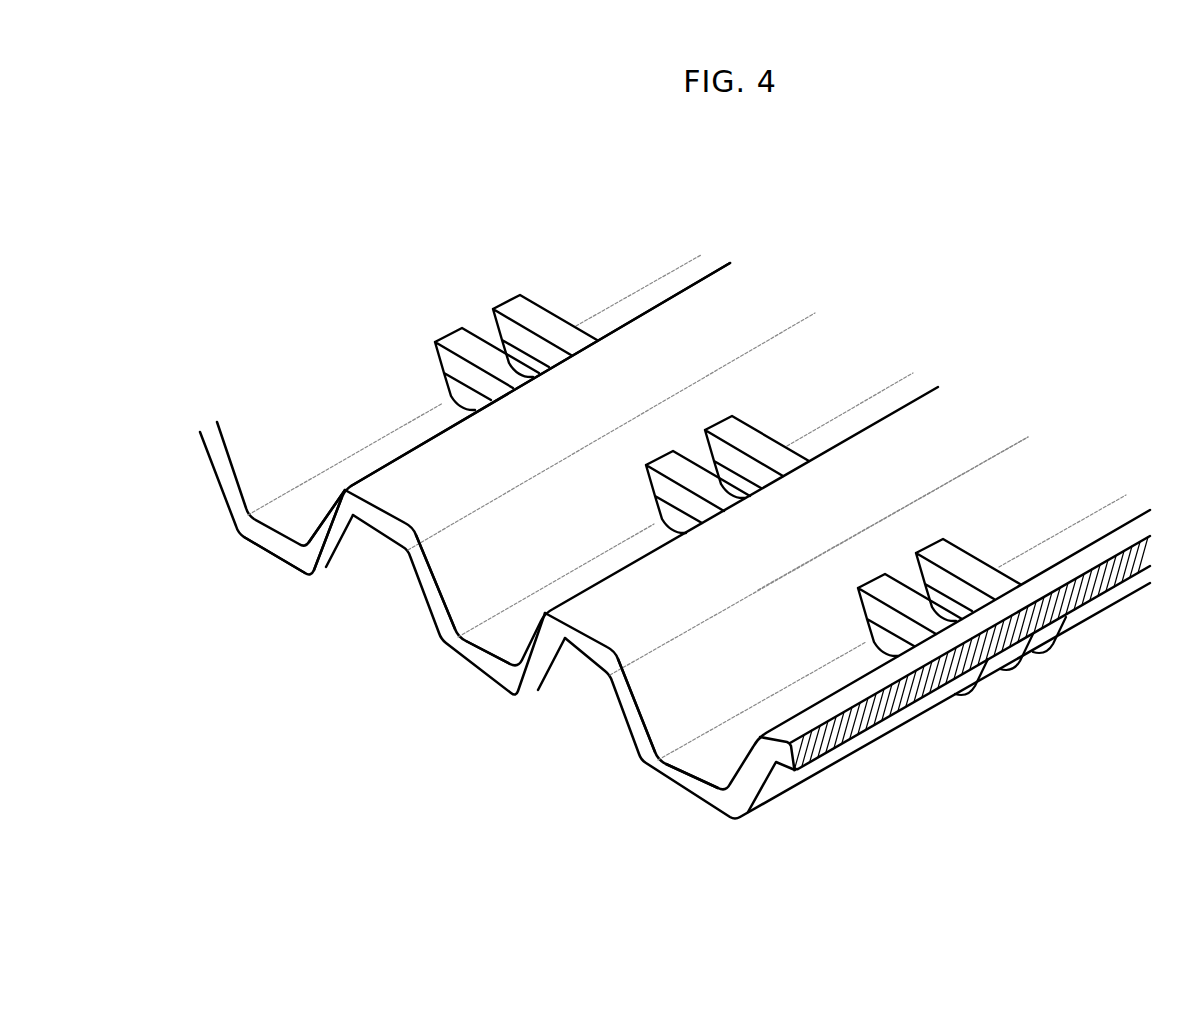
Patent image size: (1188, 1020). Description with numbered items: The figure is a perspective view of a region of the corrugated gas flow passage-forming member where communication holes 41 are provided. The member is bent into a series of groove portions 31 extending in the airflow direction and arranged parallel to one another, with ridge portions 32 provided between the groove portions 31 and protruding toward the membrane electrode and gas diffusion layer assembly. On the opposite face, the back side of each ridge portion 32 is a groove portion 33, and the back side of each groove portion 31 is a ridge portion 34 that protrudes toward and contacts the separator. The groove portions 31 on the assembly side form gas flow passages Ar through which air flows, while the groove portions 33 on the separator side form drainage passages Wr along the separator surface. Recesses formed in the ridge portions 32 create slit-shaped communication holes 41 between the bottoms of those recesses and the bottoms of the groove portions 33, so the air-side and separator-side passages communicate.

The groove portion 31 is at (430, 610).
The ridge portion 32 is at (273, 560).
The groove portion 33 is at (567, 503).
The ridge portion 34 is at (433, 473).
The communication hole 41 is at (680, 517).
The gas flow passage Ar is at (382, 580).
The drainage passage Wr is at (823, 373).